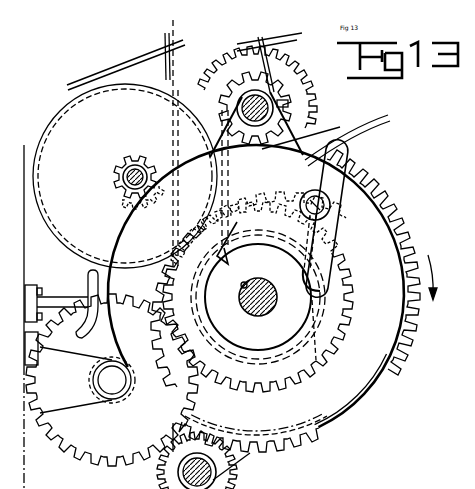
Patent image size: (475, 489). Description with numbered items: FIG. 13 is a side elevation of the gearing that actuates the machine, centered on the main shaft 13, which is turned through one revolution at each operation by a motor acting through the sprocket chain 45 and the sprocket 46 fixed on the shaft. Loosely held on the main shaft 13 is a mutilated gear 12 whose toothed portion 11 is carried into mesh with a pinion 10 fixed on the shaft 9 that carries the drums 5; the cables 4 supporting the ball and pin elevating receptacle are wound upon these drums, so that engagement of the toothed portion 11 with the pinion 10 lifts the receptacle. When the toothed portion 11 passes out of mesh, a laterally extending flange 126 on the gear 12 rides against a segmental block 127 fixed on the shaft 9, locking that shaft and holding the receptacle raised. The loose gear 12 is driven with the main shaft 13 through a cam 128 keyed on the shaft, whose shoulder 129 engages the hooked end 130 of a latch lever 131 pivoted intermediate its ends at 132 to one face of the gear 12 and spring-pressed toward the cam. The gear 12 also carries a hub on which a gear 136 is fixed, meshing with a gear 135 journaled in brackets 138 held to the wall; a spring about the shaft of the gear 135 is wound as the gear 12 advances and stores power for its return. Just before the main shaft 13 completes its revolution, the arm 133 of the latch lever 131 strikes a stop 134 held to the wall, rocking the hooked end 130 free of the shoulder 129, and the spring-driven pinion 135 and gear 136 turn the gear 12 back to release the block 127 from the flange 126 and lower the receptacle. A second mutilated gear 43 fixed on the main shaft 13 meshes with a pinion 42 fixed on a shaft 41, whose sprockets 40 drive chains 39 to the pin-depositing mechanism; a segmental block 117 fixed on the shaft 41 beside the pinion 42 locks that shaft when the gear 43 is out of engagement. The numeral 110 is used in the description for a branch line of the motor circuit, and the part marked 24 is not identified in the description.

The cables 4 is at (147, 60).
The drums 5 is at (97, 107).
The shaft 9 is at (136, 168).
The pinion 10 is at (120, 161).
The toothed portion 11 is at (155, 415).
The mutilated gear 12 is at (293, 413).
The main shaft 13 is at (240, 297).
The gear wheel 24 is at (417, 244).
The chains 39 is at (282, 40).
The sprockets 40 is at (285, 70).
The shaft 41 is at (290, 96).
The pinion 42 is at (285, 106).
The mutilated gear 43 is at (105, 243).
The sprocket chain 45 is at (165, 37).
The sprocket 46 is at (322, 337).
The branch line 110 is at (209, 456).
The segmental block 117 is at (278, 139).
The flange 126 is at (118, 232).
The segmental block 127 is at (125, 195).
The cam 128 is at (275, 323).
The shoulder 129 is at (219, 257).
The hooked end 130 is at (320, 283).
The latch lever 131 is at (322, 259).
The pivot 132 is at (330, 213).
The arm 133 is at (343, 157).
The stop 134 is at (72, 303).
The gear 135 is at (78, 443).
The gear 136 is at (333, 318).
The brackets 138 is at (60, 397).